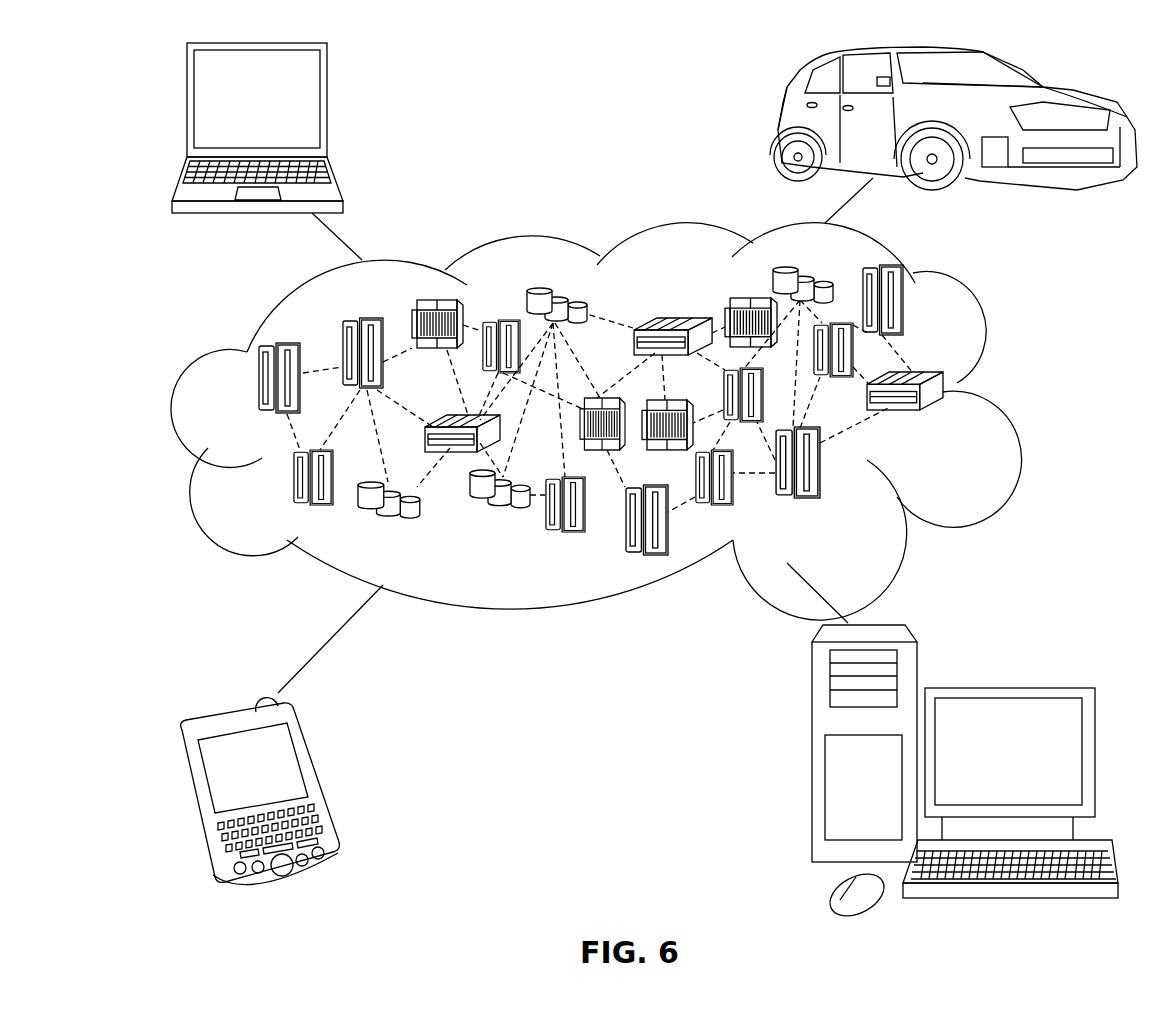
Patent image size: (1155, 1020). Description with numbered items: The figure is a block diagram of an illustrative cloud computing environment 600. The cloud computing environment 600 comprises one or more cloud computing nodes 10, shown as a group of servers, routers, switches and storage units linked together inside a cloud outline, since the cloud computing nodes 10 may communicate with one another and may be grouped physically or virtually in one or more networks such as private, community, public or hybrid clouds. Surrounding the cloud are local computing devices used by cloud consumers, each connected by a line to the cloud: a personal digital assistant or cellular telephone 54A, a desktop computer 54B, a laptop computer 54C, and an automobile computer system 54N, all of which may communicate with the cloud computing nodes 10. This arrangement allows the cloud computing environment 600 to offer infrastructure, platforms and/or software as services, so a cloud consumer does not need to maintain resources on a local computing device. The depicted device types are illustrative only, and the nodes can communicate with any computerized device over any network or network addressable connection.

The cloud computing environment 600 is at (1007, 391).
The cloud computing nodes 10 is at (956, 423).
The personal digital assistant (PDA) or cellular telephone 54A is at (317, 782).
The desktop computer 54B is at (1003, 687).
The laptop computer 54C is at (327, 108).
The automobile computer system 54N is at (778, 124).